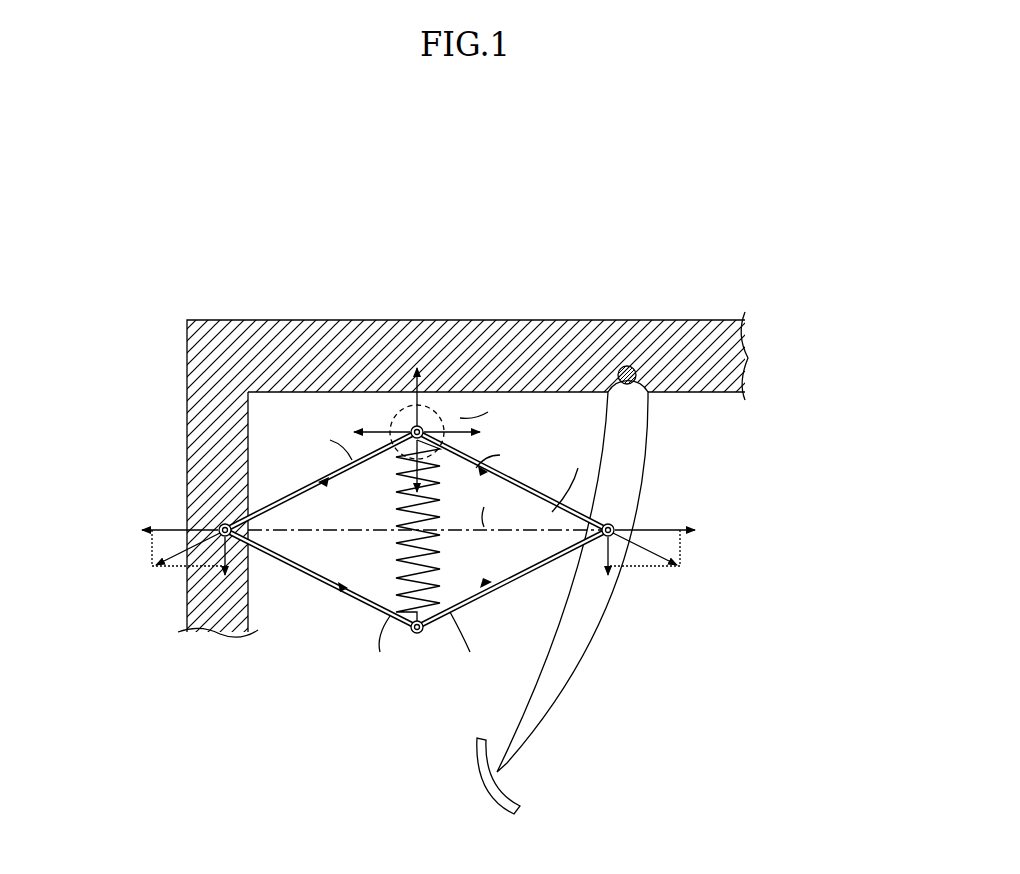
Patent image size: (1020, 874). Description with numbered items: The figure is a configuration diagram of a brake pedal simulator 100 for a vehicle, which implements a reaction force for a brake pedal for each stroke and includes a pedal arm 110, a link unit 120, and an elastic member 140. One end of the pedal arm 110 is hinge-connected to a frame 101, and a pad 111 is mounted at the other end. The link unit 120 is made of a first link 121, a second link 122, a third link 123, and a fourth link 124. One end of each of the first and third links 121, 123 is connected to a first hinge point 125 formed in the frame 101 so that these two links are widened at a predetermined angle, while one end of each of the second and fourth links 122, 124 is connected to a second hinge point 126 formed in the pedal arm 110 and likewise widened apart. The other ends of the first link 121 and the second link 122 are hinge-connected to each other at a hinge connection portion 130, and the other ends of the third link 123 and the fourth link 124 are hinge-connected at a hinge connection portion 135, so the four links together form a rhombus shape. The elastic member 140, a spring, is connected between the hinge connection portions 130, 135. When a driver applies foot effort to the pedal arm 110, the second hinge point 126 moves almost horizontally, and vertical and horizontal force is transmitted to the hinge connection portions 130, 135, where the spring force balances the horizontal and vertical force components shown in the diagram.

The brake pedal simulator 100 is at (497, 228).
The frame 101 is at (480, 335).
The pedal arm 110 is at (640, 437).
The pad 111 is at (492, 790).
The link unit 120 is at (416, 565).
The first link 121 is at (318, 484).
The second link 122 is at (548, 498).
The third link 123 is at (340, 590).
The fourth link 124 is at (495, 588).
The first hinge point 125 is at (220, 524).
The second hinge point 126 is at (614, 526).
The hinge connection portion 130 is at (404, 426).
The hinge connection portion 135 is at (418, 636).
The elastic member 140 is at (396, 500).